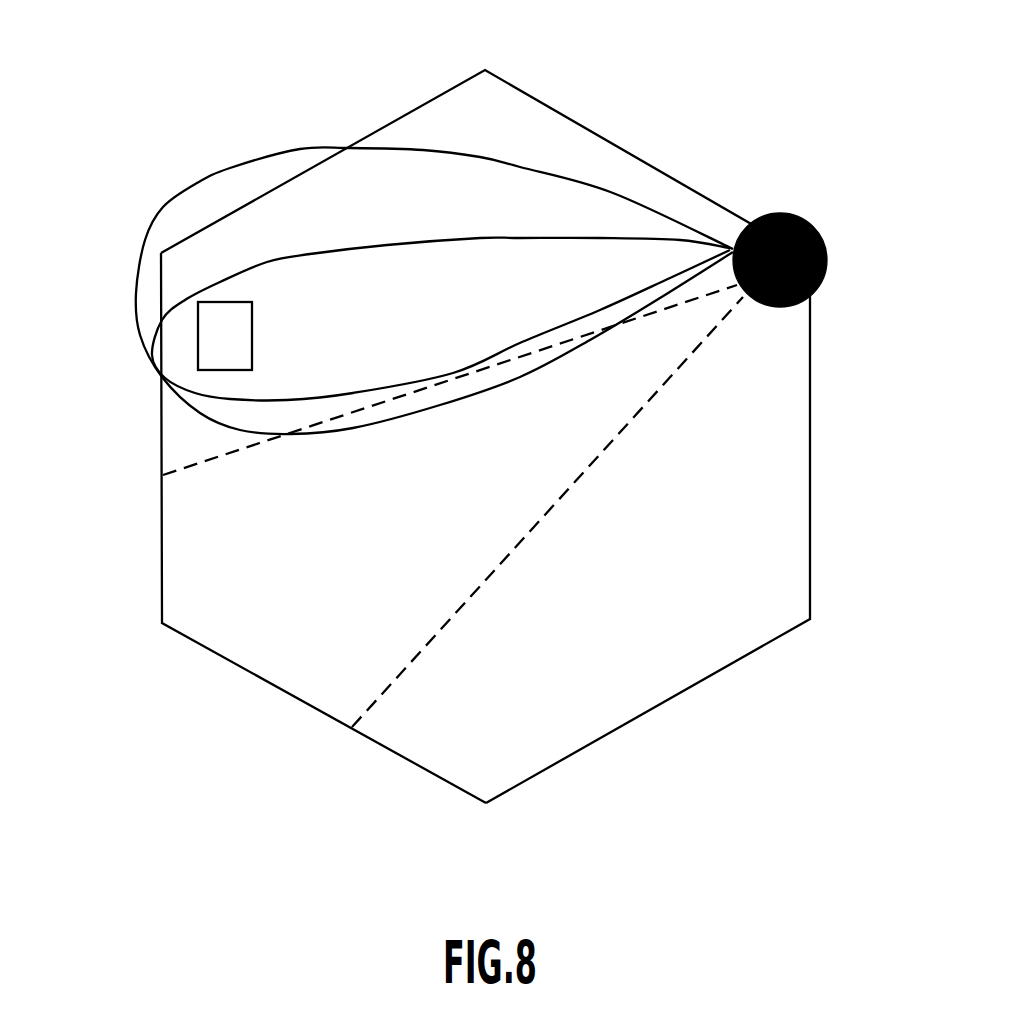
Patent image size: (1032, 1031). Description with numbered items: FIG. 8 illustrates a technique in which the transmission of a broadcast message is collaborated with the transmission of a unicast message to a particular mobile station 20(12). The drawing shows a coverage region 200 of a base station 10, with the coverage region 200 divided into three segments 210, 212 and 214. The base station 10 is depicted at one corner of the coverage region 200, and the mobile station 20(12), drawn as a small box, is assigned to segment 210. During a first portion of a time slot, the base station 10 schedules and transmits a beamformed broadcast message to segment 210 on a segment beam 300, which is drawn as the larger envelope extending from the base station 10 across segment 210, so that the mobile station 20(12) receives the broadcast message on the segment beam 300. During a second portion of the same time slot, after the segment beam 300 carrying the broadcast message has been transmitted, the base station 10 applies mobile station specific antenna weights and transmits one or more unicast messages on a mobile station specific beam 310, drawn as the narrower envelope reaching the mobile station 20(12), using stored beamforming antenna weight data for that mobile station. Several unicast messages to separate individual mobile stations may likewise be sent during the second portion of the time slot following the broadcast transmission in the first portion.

The base station 10 is at (780, 213).
The mobile station 12 is at (207, 345).
The mobile station 20 is at (147, 397).
The coverage region 200 is at (538, 436).
The segment 210 is at (595, 153).
The segment 212 is at (247, 648).
The segment 214 is at (794, 487).
The segment beam 300 is at (423, 150).
The mobile station specific beam 310 is at (267, 262).